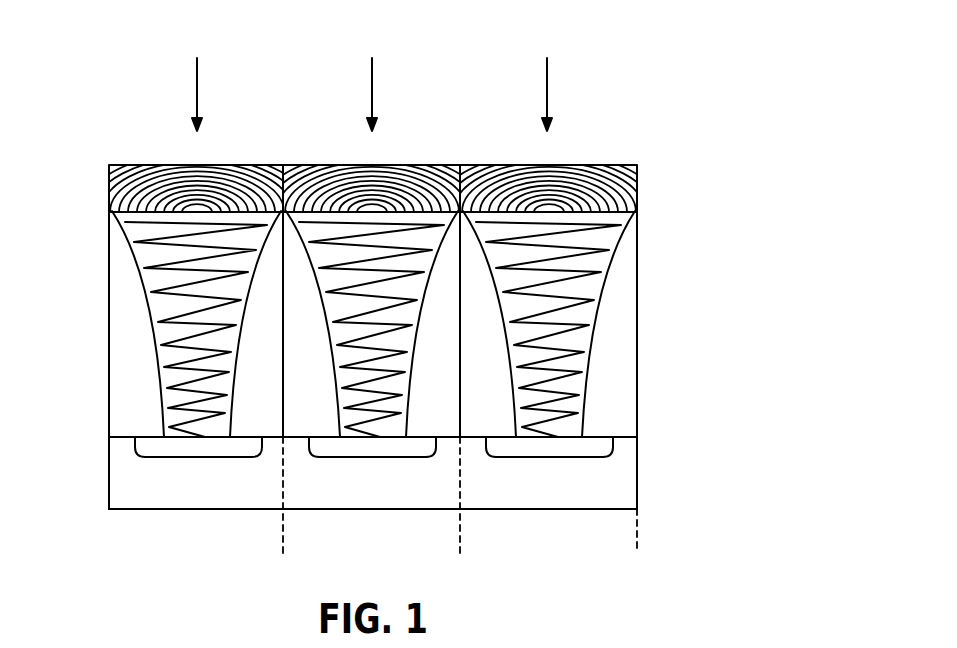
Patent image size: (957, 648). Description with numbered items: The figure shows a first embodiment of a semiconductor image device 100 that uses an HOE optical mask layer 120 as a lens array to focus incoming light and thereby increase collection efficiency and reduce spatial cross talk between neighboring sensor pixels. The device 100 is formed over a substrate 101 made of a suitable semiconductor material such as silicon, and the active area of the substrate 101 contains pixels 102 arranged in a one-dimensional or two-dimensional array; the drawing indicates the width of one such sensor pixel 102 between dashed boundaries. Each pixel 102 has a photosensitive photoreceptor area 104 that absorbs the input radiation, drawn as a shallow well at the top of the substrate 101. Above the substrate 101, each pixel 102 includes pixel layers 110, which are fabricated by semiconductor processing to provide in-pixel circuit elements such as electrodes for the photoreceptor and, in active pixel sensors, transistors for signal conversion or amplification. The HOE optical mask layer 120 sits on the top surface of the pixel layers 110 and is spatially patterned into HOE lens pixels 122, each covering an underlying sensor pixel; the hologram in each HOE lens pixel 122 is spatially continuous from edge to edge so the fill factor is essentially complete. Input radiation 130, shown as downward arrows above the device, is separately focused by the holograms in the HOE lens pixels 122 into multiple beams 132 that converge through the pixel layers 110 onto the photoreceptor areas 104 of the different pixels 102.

The semiconductor image device 100 is at (110, 44).
The substrate 101 is at (109, 473).
The pixel 102 is at (637, 535).
The photoreceptor area 104 is at (612, 445).
The pixel layers 110 is at (644, 212).
The HOE optical mask layer 120 is at (438, 187).
The HOE lens pixel 122 is at (593, 164).
The input radiation 130 is at (200, 88).
The beam 132 is at (153, 335).